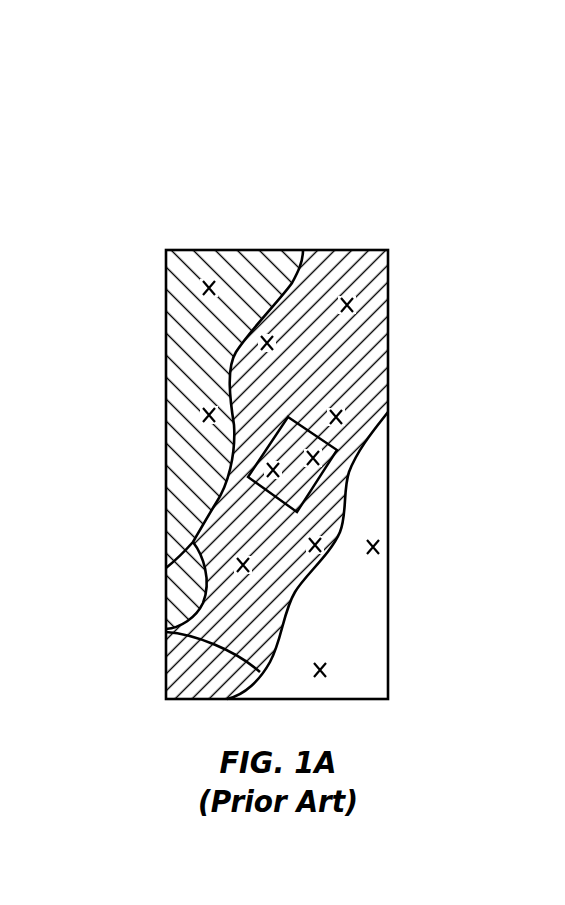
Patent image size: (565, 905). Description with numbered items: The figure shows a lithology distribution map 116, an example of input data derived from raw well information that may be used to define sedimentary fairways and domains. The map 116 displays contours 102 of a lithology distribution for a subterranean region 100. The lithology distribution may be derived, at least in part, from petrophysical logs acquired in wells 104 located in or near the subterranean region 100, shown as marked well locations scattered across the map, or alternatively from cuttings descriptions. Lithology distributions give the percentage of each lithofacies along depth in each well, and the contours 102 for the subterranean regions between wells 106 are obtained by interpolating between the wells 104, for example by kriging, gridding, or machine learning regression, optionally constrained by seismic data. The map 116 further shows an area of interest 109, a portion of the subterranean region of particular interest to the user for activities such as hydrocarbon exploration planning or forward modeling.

The subterranean region 100 is at (178, 360).
The contours 102 is at (173, 632).
The wells 104 is at (347, 418).
The subterranean regions between wells 106 is at (345, 609).
The area of interest (AOI) 109 is at (347, 495).
The lithology distribution map 116 is at (278, 248).